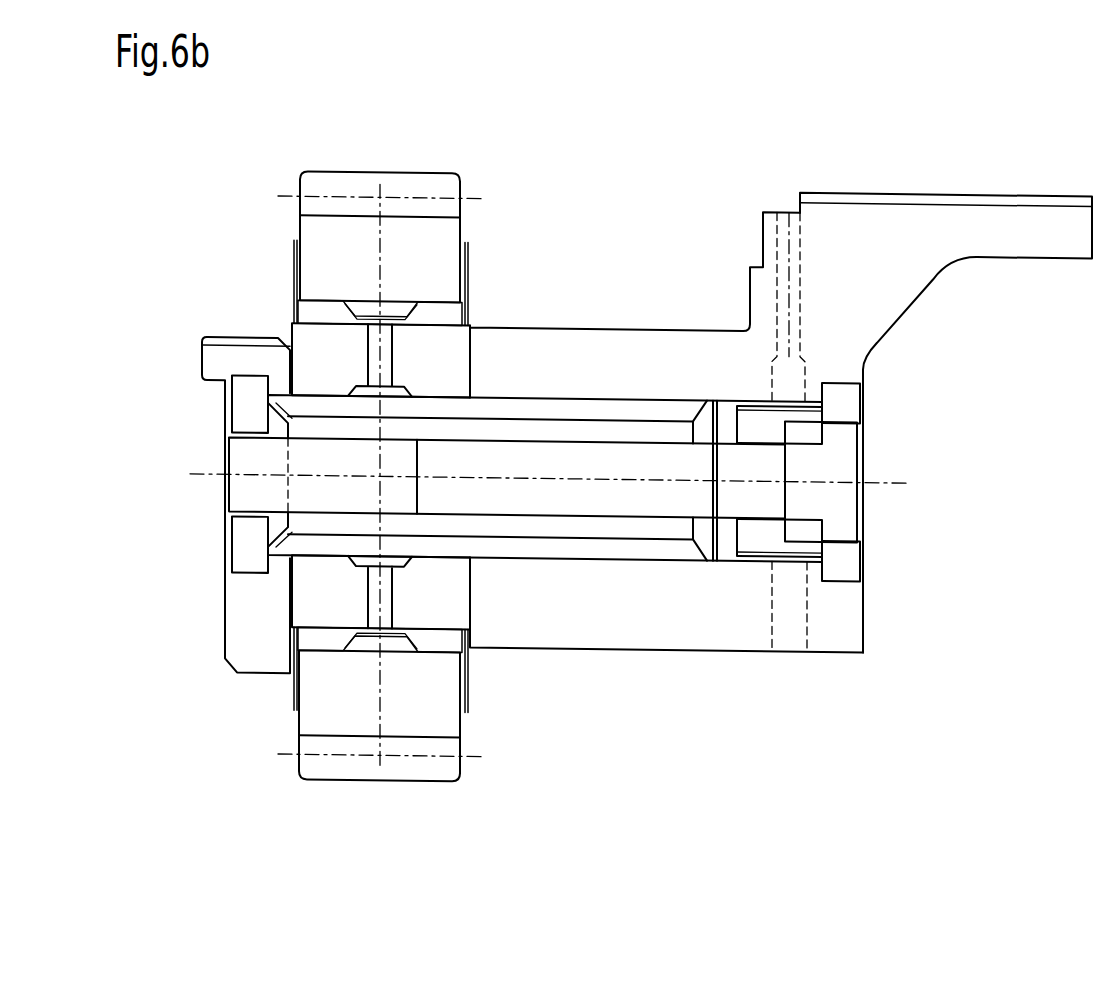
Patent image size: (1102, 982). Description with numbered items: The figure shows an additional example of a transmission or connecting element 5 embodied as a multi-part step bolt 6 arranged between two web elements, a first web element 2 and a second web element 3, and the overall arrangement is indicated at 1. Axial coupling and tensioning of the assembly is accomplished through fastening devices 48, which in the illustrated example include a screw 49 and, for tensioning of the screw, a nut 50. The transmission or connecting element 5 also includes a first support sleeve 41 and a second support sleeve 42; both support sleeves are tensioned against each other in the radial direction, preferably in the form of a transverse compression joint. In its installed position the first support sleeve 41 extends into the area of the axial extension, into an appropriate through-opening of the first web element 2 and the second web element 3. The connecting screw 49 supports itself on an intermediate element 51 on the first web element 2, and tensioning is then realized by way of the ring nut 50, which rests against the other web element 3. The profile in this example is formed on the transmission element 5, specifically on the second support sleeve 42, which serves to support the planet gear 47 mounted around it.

The roller arrangement 1 is at (630, 250).
The first web element 2 is at (888, 227).
The second web element 3 is at (243, 362).
The transmission or connecting element 5 is at (581, 548).
The multi-part step bolt 6 is at (640, 546).
The first support sleeve 41 is at (697, 547).
The second support sleeve 42 is at (455, 357).
The planet gear 47 is at (432, 707).
The fastening devices 48 is at (884, 458).
The screw 49 is at (838, 505).
The nut 50 is at (243, 417).
The intermediate element 51 is at (852, 397).